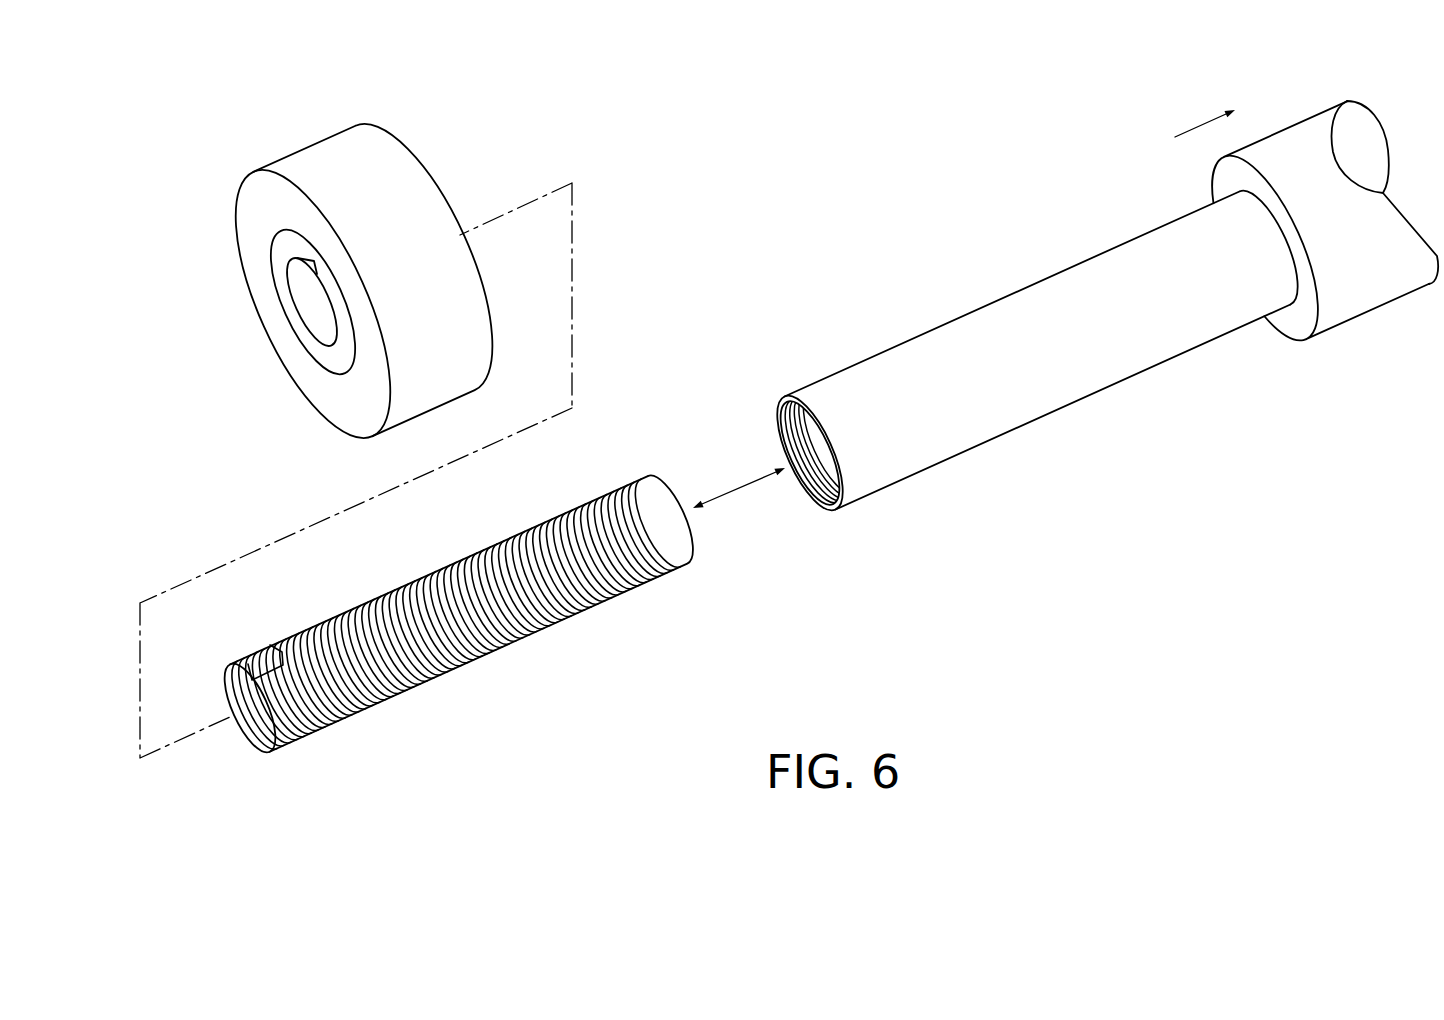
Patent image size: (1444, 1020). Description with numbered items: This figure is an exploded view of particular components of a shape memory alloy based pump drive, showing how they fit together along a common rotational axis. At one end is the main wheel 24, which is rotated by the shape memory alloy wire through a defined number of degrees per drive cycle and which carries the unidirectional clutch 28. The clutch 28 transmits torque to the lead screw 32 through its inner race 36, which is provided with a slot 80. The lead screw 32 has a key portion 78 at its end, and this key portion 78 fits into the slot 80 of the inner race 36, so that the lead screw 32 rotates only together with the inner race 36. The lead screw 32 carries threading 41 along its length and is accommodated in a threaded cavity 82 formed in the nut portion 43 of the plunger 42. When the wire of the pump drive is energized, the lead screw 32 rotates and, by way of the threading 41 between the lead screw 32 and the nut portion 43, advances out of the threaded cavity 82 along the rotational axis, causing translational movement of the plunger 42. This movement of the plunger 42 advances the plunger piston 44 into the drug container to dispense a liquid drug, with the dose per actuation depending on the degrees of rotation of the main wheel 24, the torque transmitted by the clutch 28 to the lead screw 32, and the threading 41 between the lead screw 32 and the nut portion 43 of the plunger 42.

The main wheel 24 is at (307, 152).
The unidirectional clutch 28 is at (274, 327).
The inner race 36 is at (282, 280).
The slot 80 is at (302, 258).
The lead screw 32 is at (252, 733).
The key portion 78 is at (262, 658).
The threading 41 is at (610, 580).
The threaded cavity 82 is at (776, 434).
The plunger 42 is at (968, 312).
The nut portion 43 is at (982, 428).
The plunger piston 44 is at (1363, 300).